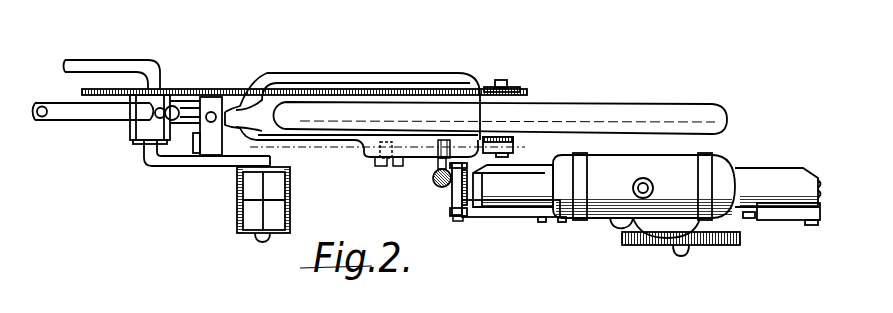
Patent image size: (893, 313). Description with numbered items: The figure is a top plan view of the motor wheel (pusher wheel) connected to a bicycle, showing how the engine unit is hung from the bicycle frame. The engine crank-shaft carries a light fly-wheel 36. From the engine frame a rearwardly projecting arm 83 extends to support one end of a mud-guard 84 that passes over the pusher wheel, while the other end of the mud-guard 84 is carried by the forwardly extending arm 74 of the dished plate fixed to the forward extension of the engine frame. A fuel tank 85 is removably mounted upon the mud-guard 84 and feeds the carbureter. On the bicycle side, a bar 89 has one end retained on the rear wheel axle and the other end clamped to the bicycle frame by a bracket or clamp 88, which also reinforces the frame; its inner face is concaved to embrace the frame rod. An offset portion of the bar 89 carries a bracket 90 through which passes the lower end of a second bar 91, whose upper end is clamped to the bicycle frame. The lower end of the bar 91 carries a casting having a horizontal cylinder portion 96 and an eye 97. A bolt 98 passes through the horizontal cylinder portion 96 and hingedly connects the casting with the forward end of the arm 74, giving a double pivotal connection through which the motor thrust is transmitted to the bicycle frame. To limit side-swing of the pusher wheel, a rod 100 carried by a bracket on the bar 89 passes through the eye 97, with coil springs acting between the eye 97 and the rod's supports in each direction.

The fly-wheel 36 is at (653, 238).
The arm 74 is at (502, 209).
The rearwardly projecting arm 83 is at (797, 213).
The mud-guard 84 is at (518, 180).
The fuel tank 85 is at (654, 188).
The bracket or clamp 88 is at (212, 144).
The bar 89 is at (340, 147).
The bracket 90 is at (433, 178).
The bar 91 is at (441, 189).
The horizontal cylinder portion 96 is at (453, 192).
The eye 97 is at (445, 140).
The bolt 98 is at (466, 218).
The rod 100 is at (382, 168).